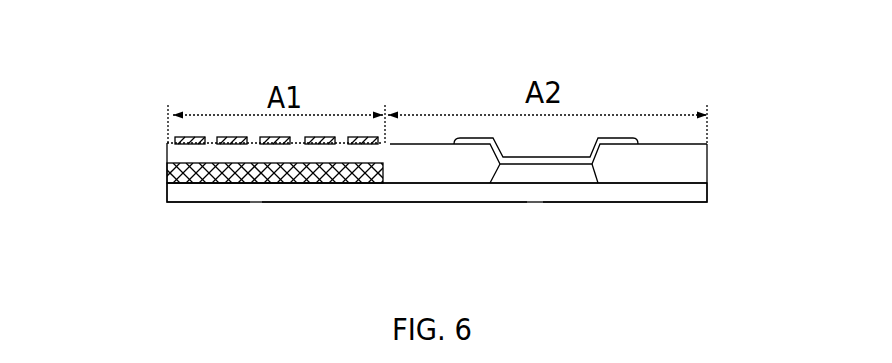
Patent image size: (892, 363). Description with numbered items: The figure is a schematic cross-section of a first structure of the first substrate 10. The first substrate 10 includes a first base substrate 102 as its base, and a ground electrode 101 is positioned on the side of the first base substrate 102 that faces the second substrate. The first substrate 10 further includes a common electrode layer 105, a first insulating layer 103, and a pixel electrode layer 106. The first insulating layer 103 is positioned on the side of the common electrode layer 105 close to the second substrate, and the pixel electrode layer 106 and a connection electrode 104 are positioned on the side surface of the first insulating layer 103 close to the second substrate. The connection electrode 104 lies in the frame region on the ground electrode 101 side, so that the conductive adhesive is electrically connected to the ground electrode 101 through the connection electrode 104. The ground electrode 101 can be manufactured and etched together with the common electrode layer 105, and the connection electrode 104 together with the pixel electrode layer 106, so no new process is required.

The first substrate 10 is at (188, 54).
The ground electrode 101 is at (542, 183).
The first base substrate 102 is at (708, 195).
The first insulating layer 103 is at (708, 167).
The connection electrode 104 is at (643, 142).
The common electrode layer 105 is at (265, 183).
The pixel electrode layer 106 is at (173, 140).